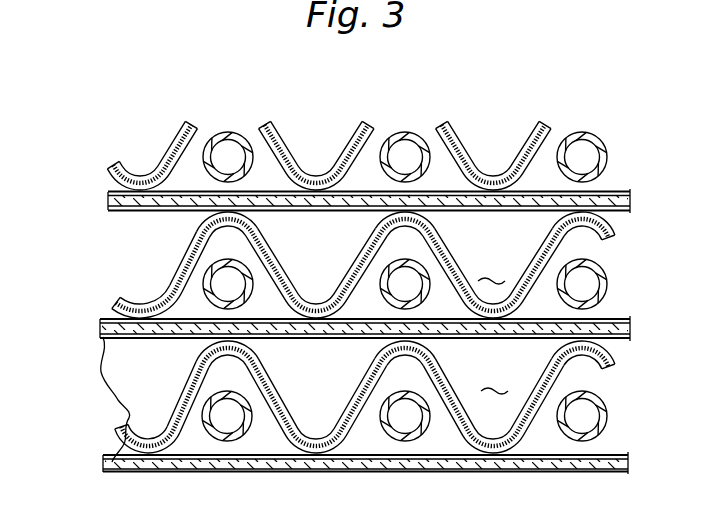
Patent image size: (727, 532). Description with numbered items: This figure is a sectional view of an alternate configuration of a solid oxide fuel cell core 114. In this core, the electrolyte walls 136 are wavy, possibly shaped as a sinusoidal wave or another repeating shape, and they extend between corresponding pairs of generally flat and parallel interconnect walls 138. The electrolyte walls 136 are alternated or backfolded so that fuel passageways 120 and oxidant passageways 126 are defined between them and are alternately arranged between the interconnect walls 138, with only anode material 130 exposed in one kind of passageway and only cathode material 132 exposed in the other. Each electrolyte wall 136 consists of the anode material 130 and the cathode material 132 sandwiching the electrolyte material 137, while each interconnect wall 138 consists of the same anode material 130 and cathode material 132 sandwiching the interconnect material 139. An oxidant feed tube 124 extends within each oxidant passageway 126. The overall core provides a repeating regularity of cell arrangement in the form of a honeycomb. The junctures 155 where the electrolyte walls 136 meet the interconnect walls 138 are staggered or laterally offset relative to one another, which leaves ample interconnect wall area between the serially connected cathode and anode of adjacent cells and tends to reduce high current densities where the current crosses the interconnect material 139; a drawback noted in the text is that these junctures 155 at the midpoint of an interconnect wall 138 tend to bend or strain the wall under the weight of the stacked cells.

The core 114 is at (127, 412).
The fuel passageways 120 is at (490, 321).
The oxidant feed tube 124 is at (573, 136).
The oxidant passageways 126 is at (225, 381).
The anode material 130 is at (267, 237).
The cathode material 132 is at (567, 237).
The electrolyte walls 136 is at (350, 123).
The electrolyte material 137 is at (172, 283).
The interconnect walls 138 is at (132, 212).
The interconnect material 139 is at (523, 209).
The junctures 155 is at (142, 197).